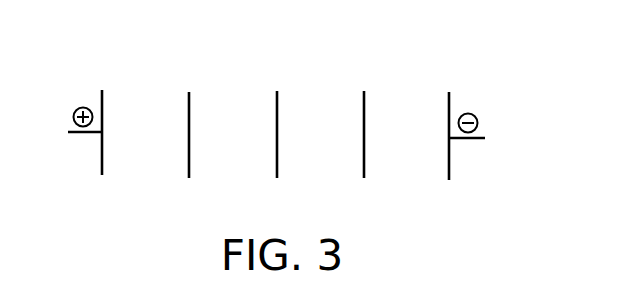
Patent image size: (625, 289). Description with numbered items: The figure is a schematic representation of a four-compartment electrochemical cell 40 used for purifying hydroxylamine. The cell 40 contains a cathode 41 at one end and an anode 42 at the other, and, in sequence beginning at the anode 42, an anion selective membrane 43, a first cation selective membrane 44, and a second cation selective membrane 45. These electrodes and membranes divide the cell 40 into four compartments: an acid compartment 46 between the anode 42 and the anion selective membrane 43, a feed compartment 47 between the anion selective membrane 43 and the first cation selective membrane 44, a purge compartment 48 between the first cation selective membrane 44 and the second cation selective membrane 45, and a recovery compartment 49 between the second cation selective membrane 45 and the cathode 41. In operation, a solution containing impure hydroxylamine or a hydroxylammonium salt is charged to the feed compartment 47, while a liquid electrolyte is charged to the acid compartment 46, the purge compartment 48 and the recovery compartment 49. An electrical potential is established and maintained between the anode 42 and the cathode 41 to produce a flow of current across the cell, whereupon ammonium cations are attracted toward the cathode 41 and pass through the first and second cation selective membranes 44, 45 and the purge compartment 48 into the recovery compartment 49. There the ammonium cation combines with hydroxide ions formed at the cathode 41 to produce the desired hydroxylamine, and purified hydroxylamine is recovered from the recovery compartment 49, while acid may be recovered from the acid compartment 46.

The electrochemical cell 40 is at (276, 119).
The cathode 41 is at (457, 123).
The anode 42 is at (92, 119).
The anion selective membrane 43 is at (188, 137).
The first cation selective membrane 44 is at (275, 138).
The second cation selective membrane 45 is at (361, 138).
The acid compartment 46 is at (145, 137).
The feed compartment 47 is at (233, 137).
The purge compartment 48 is at (320, 137).
The recovery compartment 49 is at (406, 139).